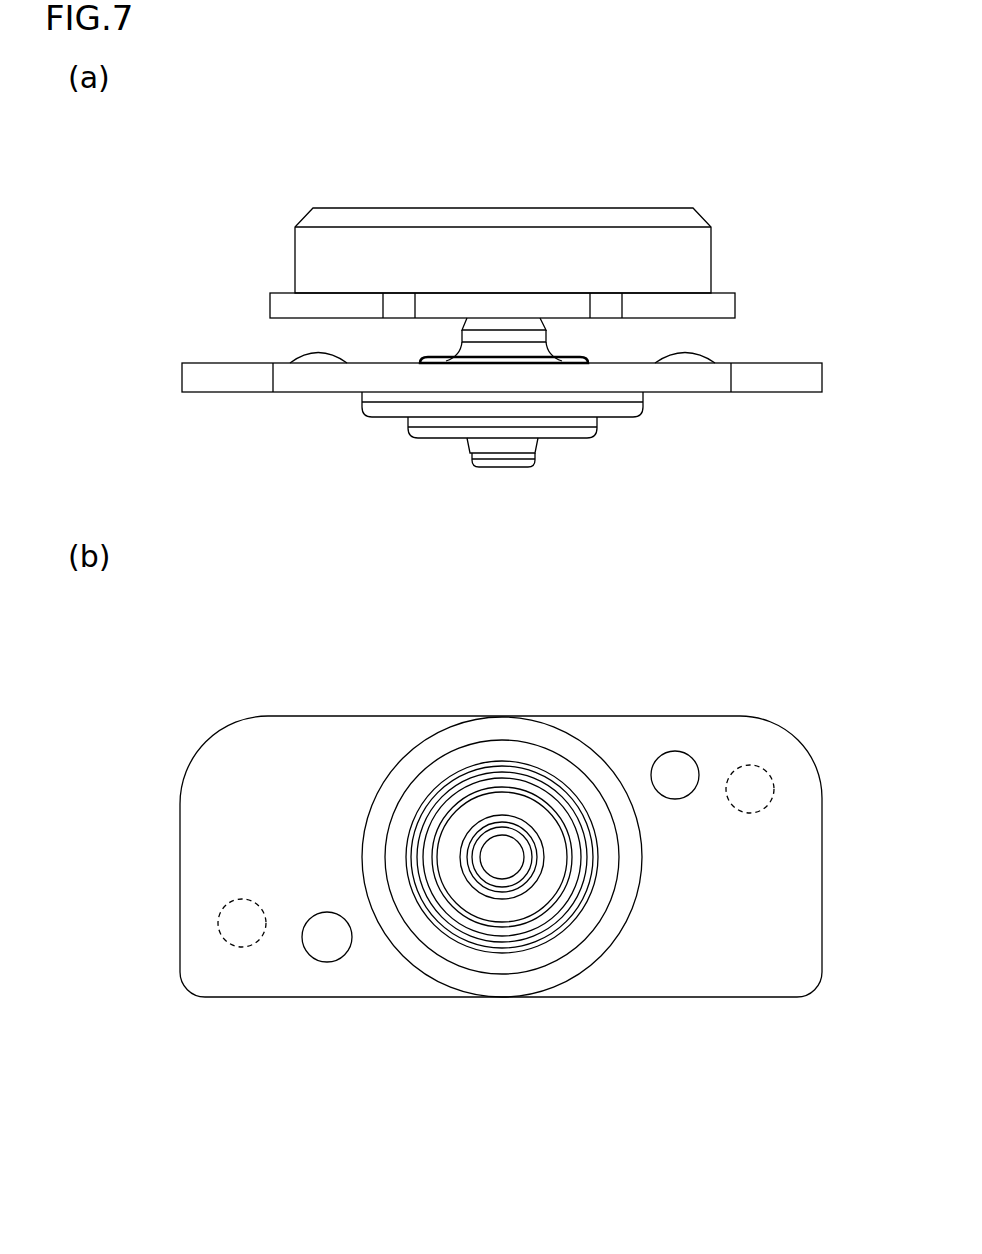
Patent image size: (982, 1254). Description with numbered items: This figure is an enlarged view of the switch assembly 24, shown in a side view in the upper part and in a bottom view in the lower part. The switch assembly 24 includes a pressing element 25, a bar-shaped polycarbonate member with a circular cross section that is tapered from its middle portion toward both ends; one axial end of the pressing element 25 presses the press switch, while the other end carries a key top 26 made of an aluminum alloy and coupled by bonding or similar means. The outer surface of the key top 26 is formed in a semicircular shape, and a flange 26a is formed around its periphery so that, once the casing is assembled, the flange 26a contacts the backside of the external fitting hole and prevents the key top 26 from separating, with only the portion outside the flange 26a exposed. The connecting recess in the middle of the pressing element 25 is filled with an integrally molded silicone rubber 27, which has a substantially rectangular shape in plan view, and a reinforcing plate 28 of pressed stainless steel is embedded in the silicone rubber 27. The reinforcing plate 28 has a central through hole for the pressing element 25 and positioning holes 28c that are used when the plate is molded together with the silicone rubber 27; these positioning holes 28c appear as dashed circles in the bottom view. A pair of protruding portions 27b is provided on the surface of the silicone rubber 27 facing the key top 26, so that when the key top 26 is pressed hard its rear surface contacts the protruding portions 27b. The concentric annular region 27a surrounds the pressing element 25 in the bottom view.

The switch assembly 24 is at (262, 206).
The pressing element 25 is at (500, 467).
The key top 26 is at (503, 220).
The flange 26a is at (718, 302).
The silicone rubber 27 is at (215, 378).
The cylindrical portion of holder 27a is at (558, 945).
The protruding portions 27b is at (322, 358).
The reinforcing plate 28 is at (300, 378).
The positioning holes 28c is at (232, 938).